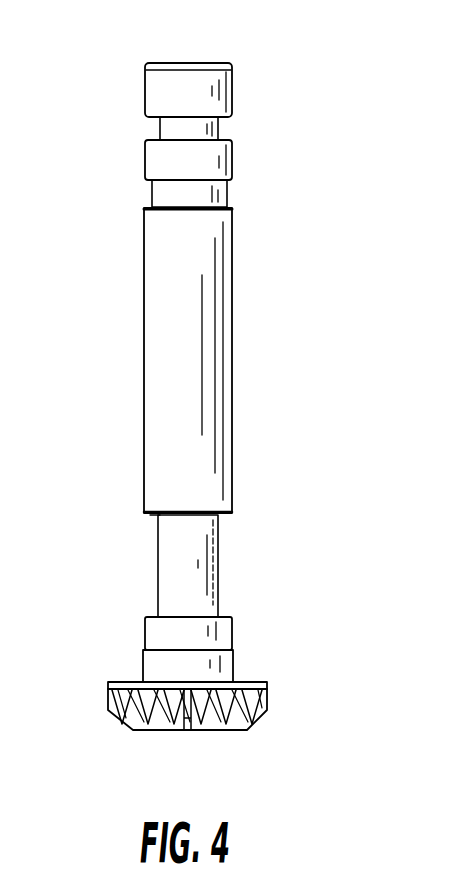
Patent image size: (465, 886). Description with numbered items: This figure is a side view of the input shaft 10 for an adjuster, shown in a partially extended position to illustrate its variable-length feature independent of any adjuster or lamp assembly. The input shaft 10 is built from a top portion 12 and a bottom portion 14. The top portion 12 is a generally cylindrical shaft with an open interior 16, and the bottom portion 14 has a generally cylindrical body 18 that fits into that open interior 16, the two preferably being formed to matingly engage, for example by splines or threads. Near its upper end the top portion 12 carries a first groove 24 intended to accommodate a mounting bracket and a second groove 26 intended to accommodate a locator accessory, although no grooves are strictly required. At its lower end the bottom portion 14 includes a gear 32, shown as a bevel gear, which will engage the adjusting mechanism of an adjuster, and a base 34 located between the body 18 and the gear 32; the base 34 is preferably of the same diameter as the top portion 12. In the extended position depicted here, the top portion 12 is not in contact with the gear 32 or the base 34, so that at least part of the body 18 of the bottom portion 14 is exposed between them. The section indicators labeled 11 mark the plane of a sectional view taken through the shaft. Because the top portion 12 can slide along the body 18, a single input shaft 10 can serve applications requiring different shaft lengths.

The input shaft 10 is at (330, 387).
The section line 11 is at (187, 73).
The top portion 12 is at (208, 343).
The bottom portion 14 is at (125, 627).
The open interior 16 is at (140, 525).
The body 18 is at (202, 563).
The first groove 24 is at (212, 192).
The second groove 26 is at (212, 128).
The gear 32 is at (237, 715).
The base 34 is at (223, 665).